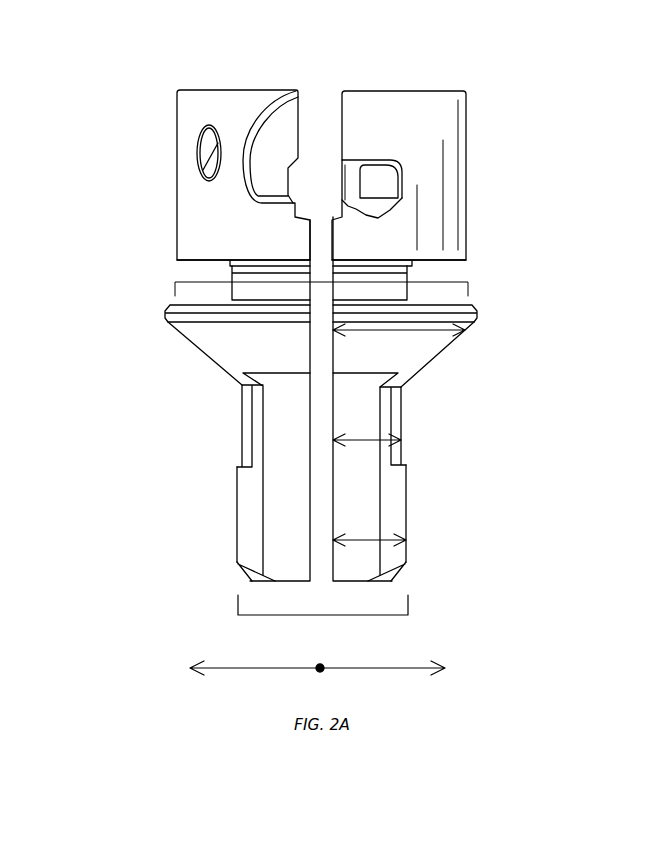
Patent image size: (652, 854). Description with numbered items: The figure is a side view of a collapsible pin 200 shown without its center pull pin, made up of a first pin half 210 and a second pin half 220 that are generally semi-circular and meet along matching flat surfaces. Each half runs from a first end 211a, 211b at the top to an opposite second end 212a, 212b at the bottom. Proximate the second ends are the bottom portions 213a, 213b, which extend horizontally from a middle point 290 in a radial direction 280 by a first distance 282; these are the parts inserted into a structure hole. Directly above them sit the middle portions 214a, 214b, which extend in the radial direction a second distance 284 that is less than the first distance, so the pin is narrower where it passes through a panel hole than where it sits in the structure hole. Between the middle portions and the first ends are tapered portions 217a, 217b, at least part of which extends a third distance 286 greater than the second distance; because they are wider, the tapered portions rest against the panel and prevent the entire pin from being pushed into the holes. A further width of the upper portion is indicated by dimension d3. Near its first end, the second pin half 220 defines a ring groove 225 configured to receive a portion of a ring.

The collapsible pin 200 is at (280, 28).
The first pin half 210 is at (144, 184).
The second pin half 220 is at (498, 186).
The first end 211a is at (217, 88).
The first end 211b is at (427, 87).
The ring groove 225 is at (400, 180).
The diameter dimension d3 is at (188, 278).
The tapered portion 217a is at (172, 330).
The tapered portion 217b is at (455, 335).
The middle portion 214a is at (250, 425).
The middle portion 214b is at (397, 430).
The bottom portion 213a is at (248, 520).
The bottom portion 213b is at (404, 518).
The second end 212a is at (248, 580).
The second end 212b is at (400, 580).
The third distance 286 is at (368, 333).
The second distance 284 is at (370, 449).
The first distance 282 is at (366, 544).
The middle point 290 is at (320, 664).
The radial direction 280 is at (317, 660).